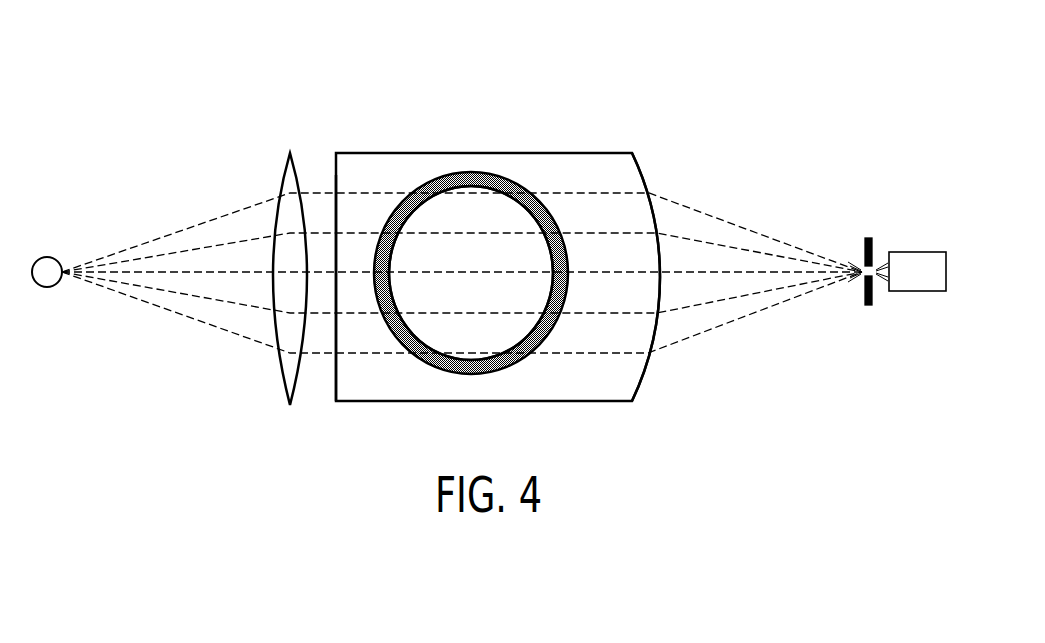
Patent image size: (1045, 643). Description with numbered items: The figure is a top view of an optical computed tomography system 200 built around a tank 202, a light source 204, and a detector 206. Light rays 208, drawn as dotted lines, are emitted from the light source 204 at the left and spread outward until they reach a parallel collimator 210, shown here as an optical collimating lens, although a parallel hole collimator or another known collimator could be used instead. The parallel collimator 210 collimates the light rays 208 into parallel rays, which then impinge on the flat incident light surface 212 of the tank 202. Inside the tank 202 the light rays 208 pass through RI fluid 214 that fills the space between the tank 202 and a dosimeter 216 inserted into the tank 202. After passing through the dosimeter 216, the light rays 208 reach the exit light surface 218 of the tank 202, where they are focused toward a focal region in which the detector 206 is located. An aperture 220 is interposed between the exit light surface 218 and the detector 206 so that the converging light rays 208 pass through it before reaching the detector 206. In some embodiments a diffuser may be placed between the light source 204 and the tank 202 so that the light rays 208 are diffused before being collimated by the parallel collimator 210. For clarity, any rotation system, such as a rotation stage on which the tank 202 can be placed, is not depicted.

The optical computed tomography system 200 is at (227, 62).
The tank 202 is at (617, 377).
The light source 204 is at (48, 268).
The detector 206 is at (905, 283).
The light rays 208 is at (172, 295).
The parallel collimator 210 is at (292, 365).
The flat incident light surface 212 is at (335, 176).
The RI fluid 214 is at (473, 178).
The dosimeter 216 is at (468, 292).
The exit light surface 218 is at (642, 172).
The aperture 220 is at (868, 238).